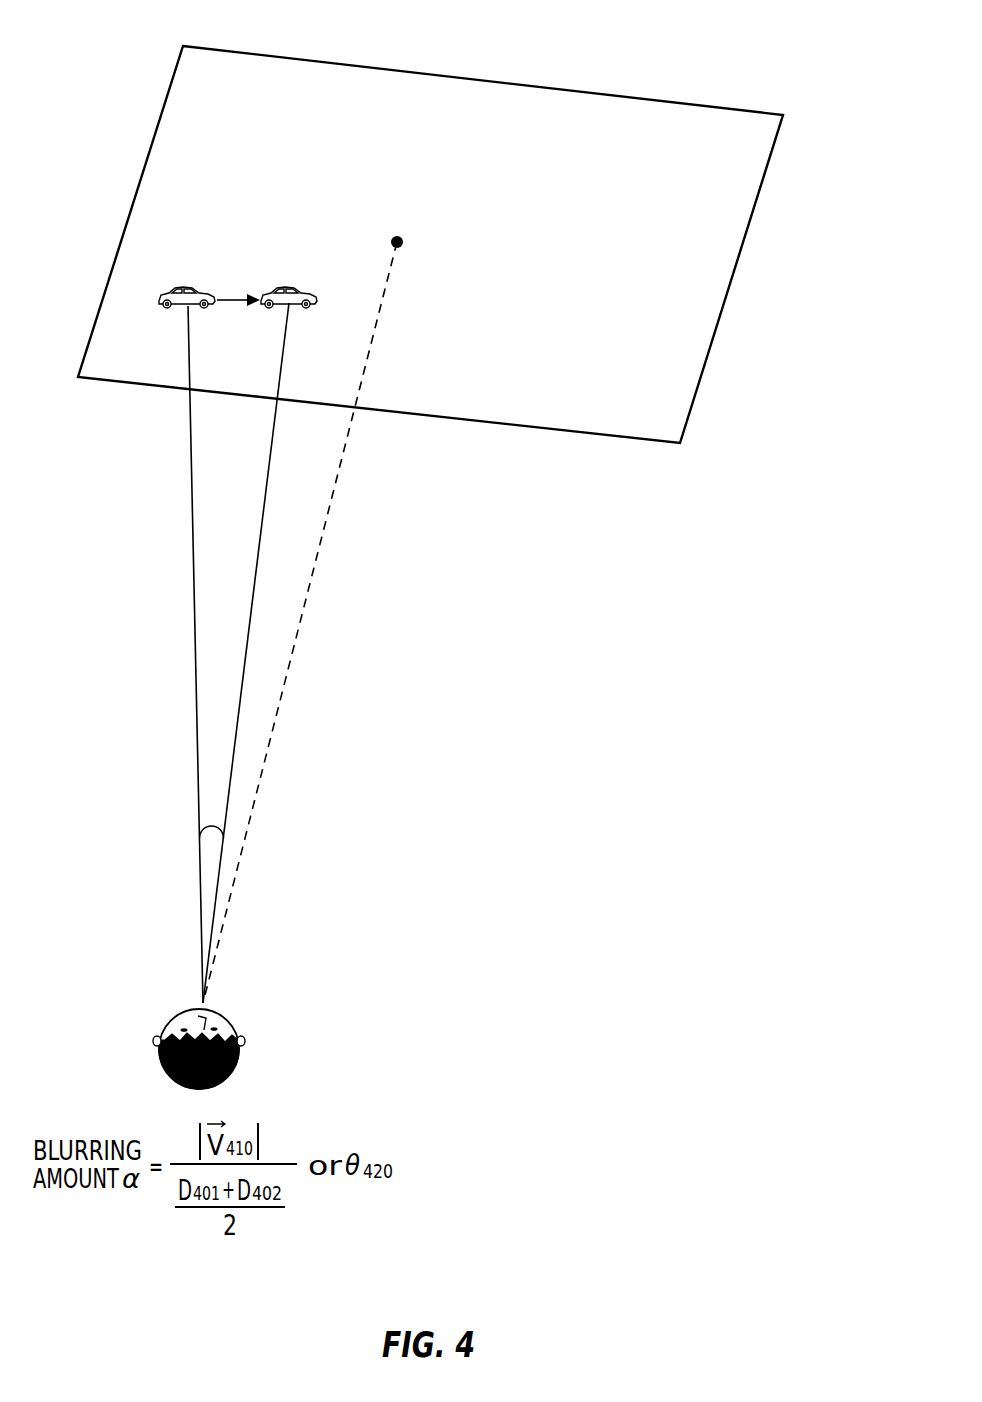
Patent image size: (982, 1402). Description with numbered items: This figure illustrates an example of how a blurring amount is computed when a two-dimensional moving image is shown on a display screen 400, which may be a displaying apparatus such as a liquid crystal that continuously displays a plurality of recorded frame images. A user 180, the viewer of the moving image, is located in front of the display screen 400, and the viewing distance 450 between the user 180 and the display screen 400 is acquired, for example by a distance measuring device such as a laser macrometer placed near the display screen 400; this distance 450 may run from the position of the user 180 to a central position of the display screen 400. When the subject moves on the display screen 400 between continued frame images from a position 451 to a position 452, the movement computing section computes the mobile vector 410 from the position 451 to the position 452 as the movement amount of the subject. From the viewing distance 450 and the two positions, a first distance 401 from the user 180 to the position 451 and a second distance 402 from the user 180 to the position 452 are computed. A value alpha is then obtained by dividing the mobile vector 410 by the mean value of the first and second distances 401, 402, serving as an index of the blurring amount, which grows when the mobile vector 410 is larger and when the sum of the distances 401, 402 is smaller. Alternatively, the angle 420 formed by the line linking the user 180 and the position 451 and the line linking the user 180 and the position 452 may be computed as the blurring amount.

The display screen 400 is at (733, 275).
The position 451 is at (166, 306).
The position 452 is at (288, 289).
The mobile vector 410 is at (223, 298).
The distance 401 is at (194, 592).
The distance 402 is at (267, 490).
The distance 450 is at (299, 627).
The angle 420 is at (200, 836).
The user 180 is at (240, 1047).